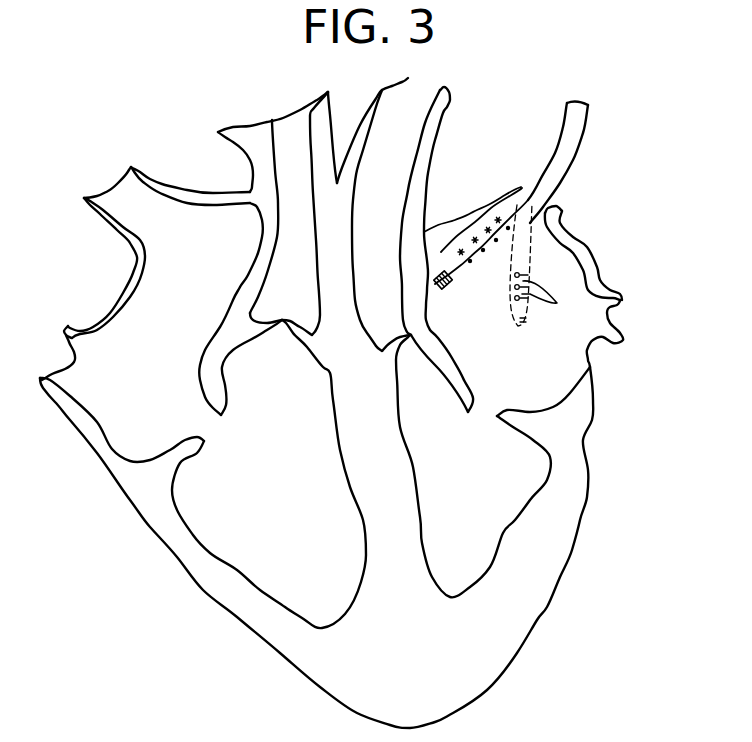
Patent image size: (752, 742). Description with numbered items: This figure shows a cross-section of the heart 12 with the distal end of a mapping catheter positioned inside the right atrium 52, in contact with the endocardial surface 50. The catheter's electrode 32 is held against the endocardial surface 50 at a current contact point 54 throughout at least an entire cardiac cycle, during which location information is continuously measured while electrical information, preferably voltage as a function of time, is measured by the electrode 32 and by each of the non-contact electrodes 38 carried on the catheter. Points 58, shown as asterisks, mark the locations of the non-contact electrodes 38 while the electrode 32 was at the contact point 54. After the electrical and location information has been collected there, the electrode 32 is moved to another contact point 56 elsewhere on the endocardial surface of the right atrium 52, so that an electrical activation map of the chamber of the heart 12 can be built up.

The heart 12 is at (613, 554).
The electrode 32 is at (444, 290).
The non-contact electrodes 38 is at (556, 299).
The endocardial surface 50 is at (448, 247).
The right atrium 52 is at (588, 260).
The current contact point 54 is at (442, 289).
The contact point 56 is at (523, 332).
The points 58 is at (461, 249).